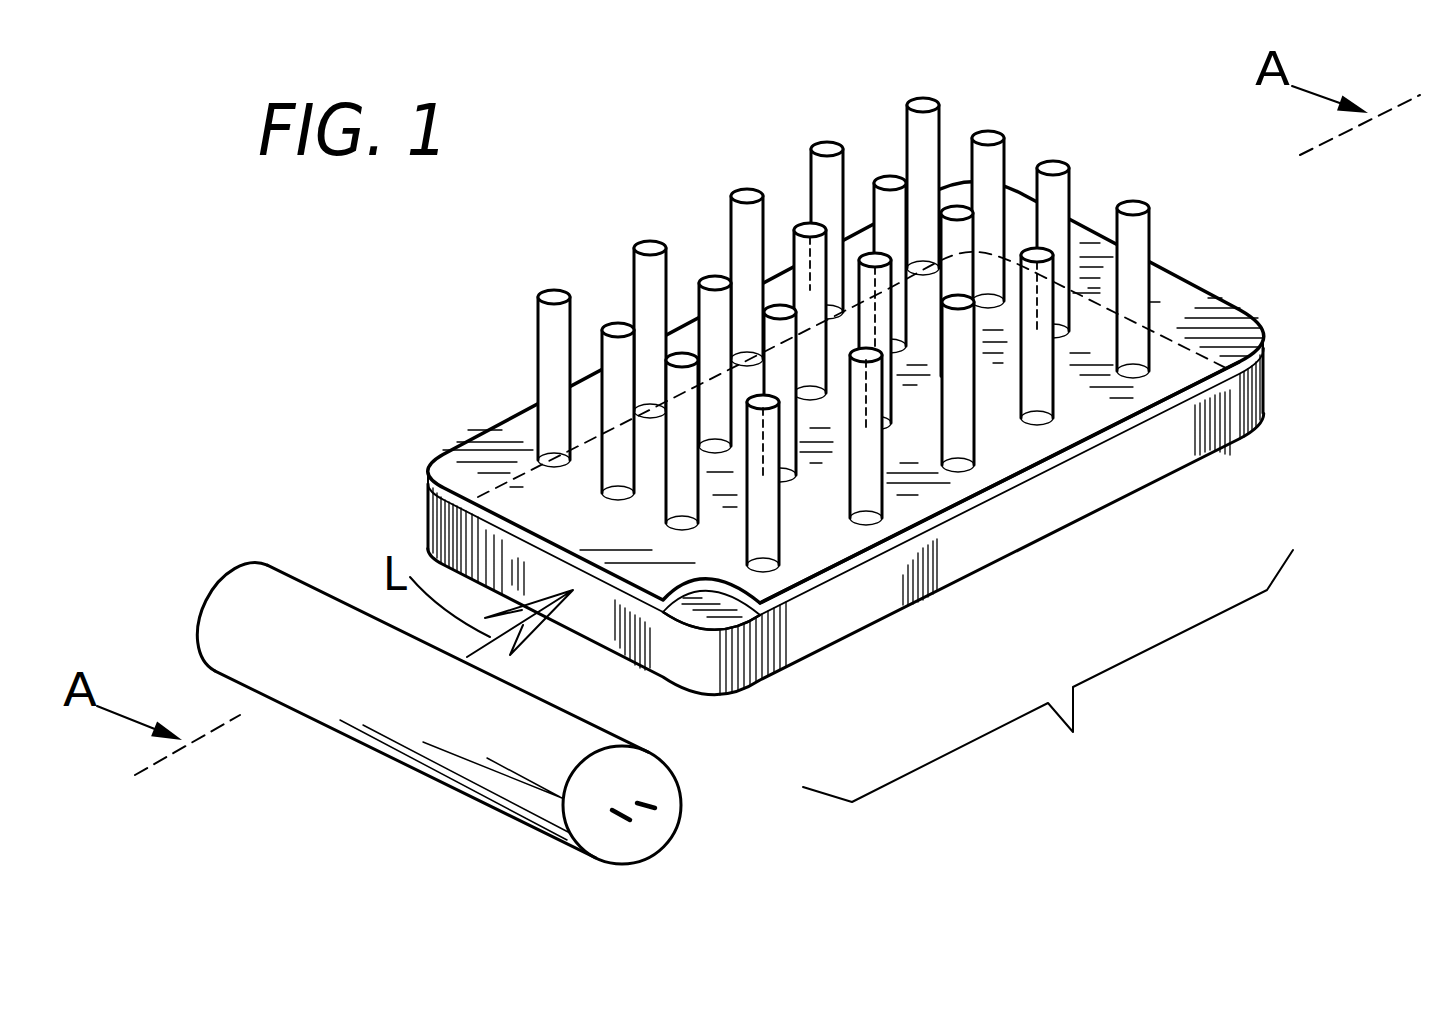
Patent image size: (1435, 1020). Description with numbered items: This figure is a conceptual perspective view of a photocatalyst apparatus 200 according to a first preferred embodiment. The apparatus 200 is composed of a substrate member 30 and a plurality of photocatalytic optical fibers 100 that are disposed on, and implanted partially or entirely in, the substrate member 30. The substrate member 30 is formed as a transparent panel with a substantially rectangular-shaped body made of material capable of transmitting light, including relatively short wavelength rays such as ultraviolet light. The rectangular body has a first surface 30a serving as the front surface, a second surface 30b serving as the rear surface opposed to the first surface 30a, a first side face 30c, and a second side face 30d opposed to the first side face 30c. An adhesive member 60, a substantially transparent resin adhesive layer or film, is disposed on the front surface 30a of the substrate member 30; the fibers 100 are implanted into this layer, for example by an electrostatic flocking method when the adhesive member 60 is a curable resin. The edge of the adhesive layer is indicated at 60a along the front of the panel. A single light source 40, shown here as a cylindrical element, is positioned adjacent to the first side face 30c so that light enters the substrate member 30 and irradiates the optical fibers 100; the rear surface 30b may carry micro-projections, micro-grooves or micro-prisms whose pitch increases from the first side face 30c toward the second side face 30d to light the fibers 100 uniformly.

The substrate member 30 is at (1144, 496).
The first surface 30a is at (703, 618).
The second surface 30b is at (973, 545).
The first side face 30c is at (1040, 512).
The second side face 30d is at (1180, 305).
The light source 40 is at (385, 782).
The adhesive member 60 is at (471, 400).
The edge of top plate 60a is at (808, 560).
The photocatalytic optical fibers 100 is at (697, 224).
The photocatalyst apparatus 200 is at (1146, 815).